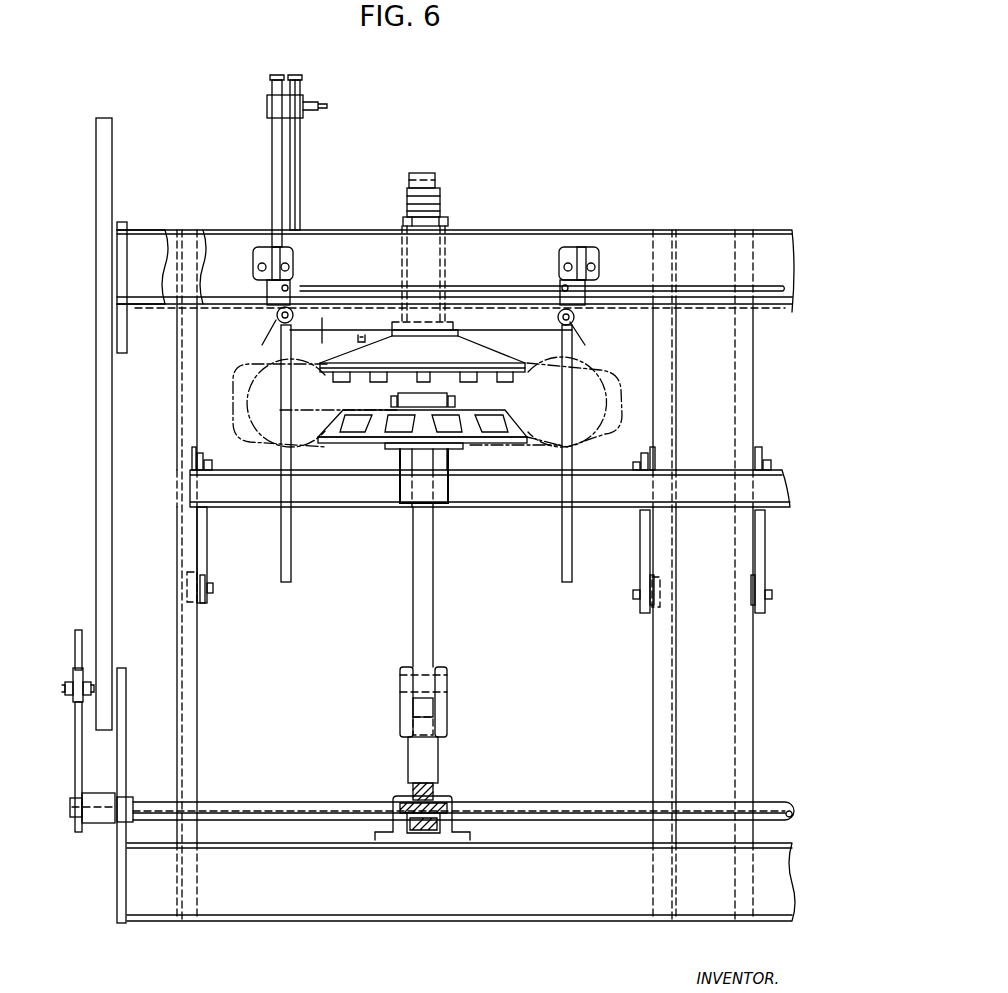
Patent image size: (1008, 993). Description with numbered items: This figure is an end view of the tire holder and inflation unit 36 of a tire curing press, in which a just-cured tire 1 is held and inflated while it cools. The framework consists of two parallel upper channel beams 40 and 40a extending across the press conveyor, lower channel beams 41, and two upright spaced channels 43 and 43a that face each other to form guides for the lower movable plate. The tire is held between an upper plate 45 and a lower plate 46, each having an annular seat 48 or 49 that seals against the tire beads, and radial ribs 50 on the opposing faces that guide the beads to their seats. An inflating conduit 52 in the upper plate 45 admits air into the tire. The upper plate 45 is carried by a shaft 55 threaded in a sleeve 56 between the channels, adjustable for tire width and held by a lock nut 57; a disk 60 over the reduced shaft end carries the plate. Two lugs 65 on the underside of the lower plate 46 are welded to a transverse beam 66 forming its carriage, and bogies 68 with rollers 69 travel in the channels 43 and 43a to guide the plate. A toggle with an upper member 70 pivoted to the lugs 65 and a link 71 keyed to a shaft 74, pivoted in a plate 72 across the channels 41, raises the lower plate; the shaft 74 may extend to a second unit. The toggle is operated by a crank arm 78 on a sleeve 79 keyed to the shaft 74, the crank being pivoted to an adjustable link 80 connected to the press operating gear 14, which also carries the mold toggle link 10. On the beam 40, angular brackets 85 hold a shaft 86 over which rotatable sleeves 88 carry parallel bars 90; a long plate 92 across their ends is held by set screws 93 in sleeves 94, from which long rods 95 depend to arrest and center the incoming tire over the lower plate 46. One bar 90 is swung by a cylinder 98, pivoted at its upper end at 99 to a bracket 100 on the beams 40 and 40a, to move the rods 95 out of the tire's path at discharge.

The tire 1 is at (604, 372).
The toggle link 10 is at (109, 575).
The large gear 14 is at (127, 735).
The tire holder and inflation unit 36 is at (475, 208).
The channel beam 40 is at (475, 245).
The channel beam 40a is at (200, 240).
The lower channel beam 41 is at (503, 860).
The upright channel 43 is at (197, 718).
The upright channel 43a is at (656, 705).
The upper plate 45 is at (495, 350).
The lower plate 46 is at (505, 450).
The annular seat 48 is at (522, 375).
The annular seat 49 is at (521, 450).
The radial ribs 50 is at (380, 410).
The inflating conduit 52 is at (378, 374).
The shaft 55 is at (437, 196).
The sleeve 56 is at (445, 278).
The lock nut 57 is at (400, 220).
The disk 60 is at (458, 324).
The lugs 65 is at (404, 480).
The transverse beam 66 is at (495, 496).
The bogies 68 is at (208, 546).
The rollers 69 is at (204, 446).
The upper toggle member 70 is at (434, 622).
The link 71 is at (433, 752).
The plate 72 is at (452, 826).
The shaft 74 is at (592, 805).
The crank arm 78 is at (82, 755).
The sleeve 79 is at (100, 823).
The adjustable link 80 is at (77, 632).
The angular brackets 85 is at (293, 252).
The shaft 86 is at (719, 290).
The rotatable sleeves 88 is at (290, 275).
The parallel bars 90 is at (276, 320).
The long plate 92 is at (343, 336).
The set screws 93 is at (292, 290).
The sleeves 94 is at (262, 345).
The rods 95 is at (292, 537).
The cylinder 98 is at (300, 139).
The pivot 99 is at (300, 85).
The bracket 100 is at (292, 182).